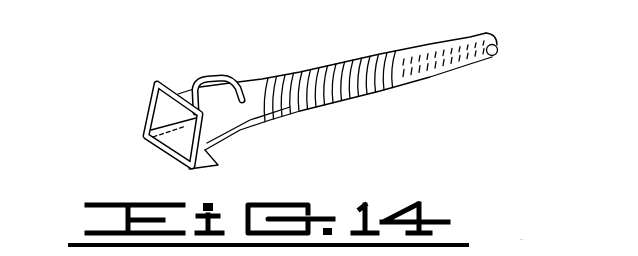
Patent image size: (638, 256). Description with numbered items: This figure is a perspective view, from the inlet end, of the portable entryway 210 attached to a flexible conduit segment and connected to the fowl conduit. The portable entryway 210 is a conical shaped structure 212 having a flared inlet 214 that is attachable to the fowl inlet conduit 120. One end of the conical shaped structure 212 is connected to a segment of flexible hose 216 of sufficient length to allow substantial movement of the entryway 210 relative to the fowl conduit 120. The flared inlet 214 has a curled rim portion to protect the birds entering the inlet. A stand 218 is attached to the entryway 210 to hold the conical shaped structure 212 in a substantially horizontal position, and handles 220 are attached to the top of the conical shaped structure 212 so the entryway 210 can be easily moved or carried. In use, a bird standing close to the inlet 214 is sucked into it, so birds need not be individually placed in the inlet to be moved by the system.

The portable entryway 210 is at (110, 96).
The flared inlet 214 is at (166, 80).
The stand 218 is at (146, 148).
The handles 220 is at (232, 86).
The flexible hose 216 is at (300, 72).
The conical shaped structure 212 is at (232, 126).
The fowl inlet conduit 120 is at (427, 53).